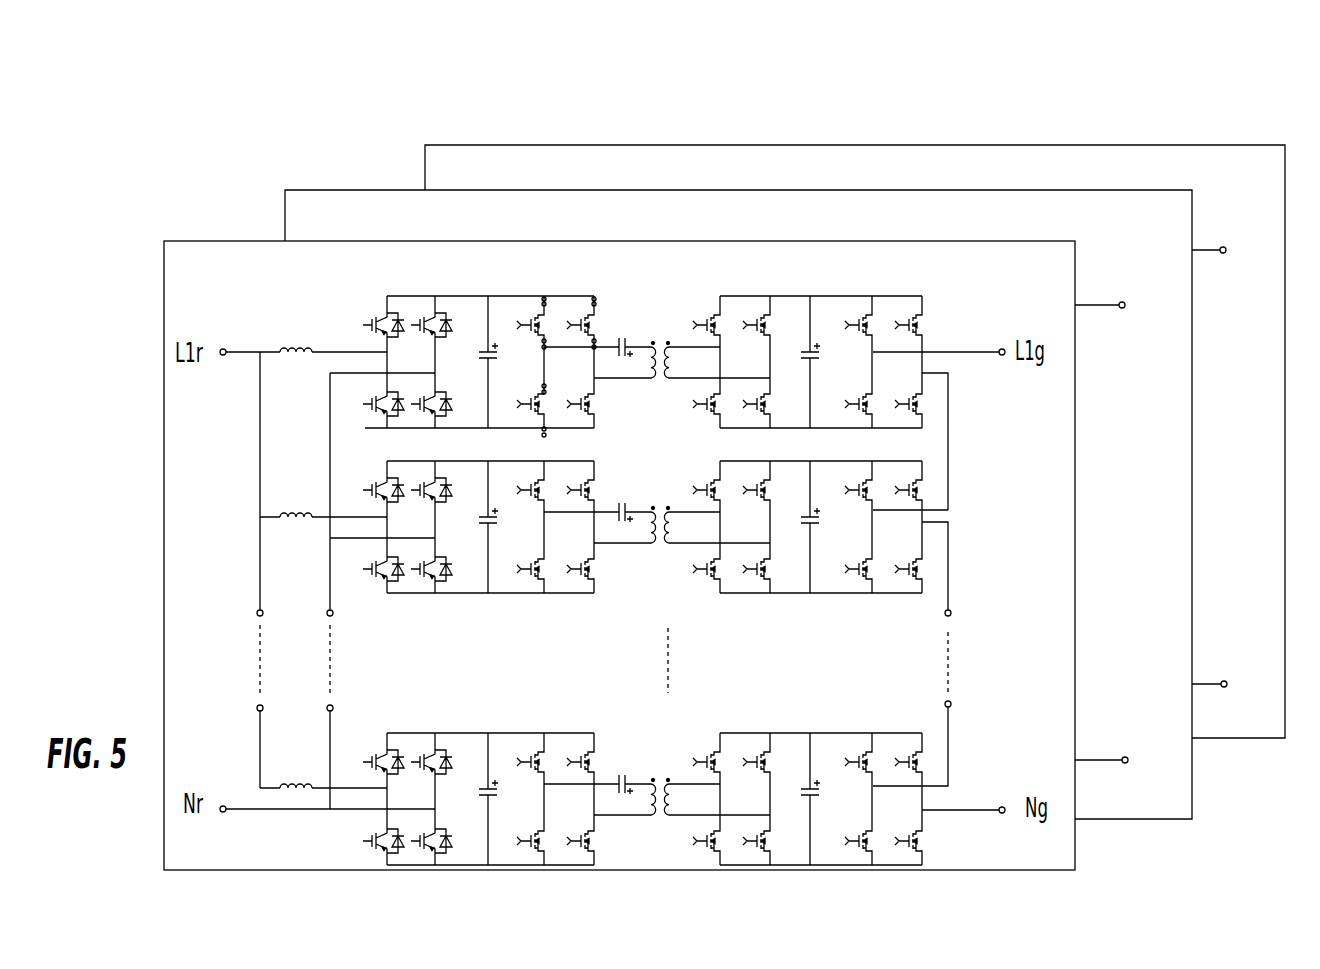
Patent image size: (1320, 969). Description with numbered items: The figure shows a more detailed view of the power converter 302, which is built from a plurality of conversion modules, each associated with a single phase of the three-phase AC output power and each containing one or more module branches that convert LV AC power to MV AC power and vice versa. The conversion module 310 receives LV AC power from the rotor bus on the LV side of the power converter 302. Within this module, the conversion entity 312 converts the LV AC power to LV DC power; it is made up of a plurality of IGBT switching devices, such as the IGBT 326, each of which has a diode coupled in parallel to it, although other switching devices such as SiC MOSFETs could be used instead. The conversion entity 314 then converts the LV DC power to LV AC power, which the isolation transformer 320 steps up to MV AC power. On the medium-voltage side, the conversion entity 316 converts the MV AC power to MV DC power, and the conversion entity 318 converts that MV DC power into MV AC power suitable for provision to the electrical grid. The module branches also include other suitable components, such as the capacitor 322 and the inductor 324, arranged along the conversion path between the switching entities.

The power converter 302 is at (1095, 85).
The conversion module 310 is at (162, 281).
The conversion entity 312 is at (371, 337).
The conversion entity 314 is at (595, 289).
The conversion entity 316 is at (775, 289).
The conversion entity 318 is at (925, 289).
The isolation transformer 320 is at (637, 346).
The capacitor 322 is at (812, 362).
The inductor 324 is at (297, 340).
The IGBT 326 is at (365, 318).